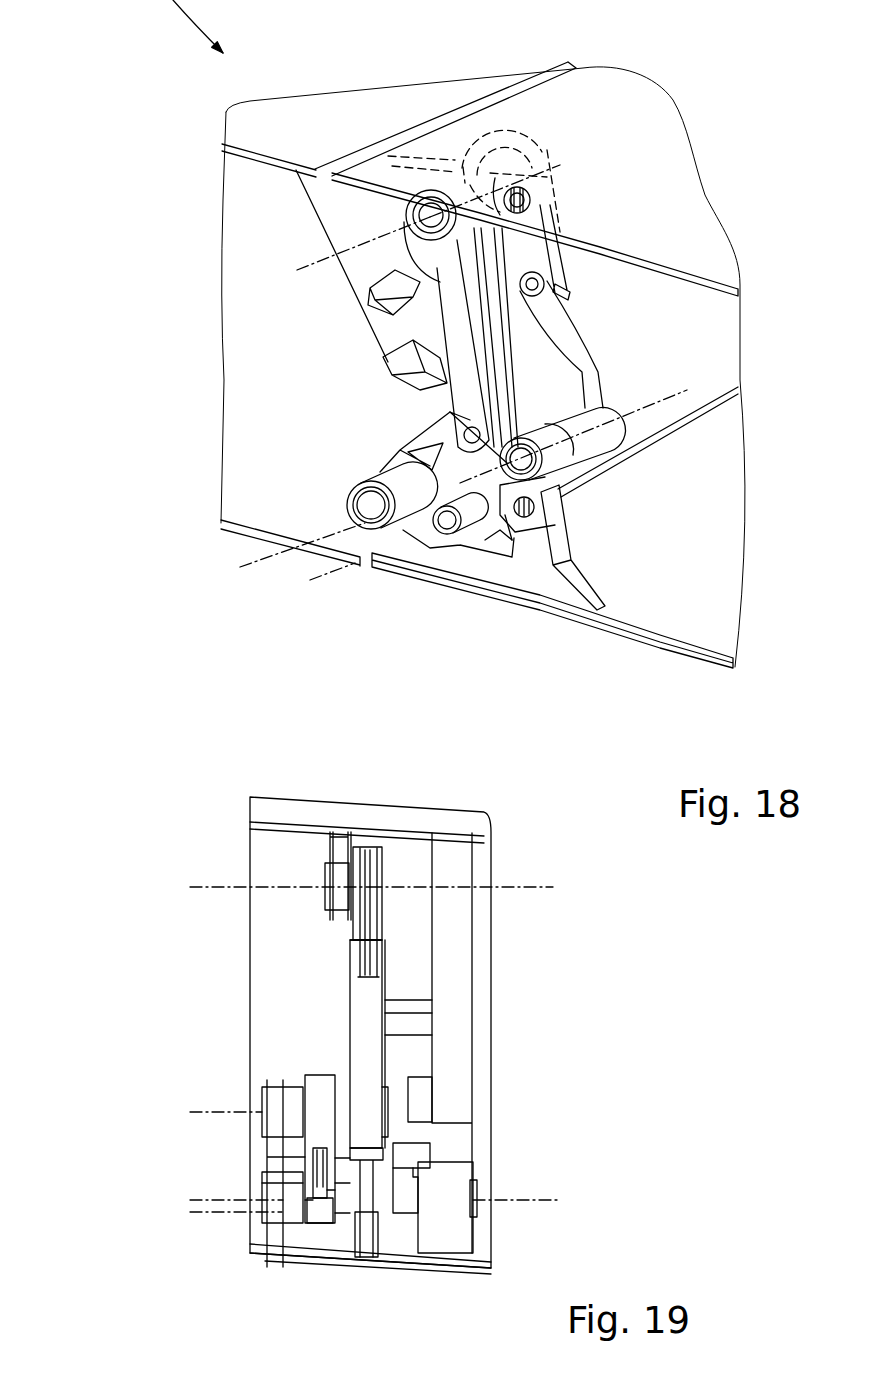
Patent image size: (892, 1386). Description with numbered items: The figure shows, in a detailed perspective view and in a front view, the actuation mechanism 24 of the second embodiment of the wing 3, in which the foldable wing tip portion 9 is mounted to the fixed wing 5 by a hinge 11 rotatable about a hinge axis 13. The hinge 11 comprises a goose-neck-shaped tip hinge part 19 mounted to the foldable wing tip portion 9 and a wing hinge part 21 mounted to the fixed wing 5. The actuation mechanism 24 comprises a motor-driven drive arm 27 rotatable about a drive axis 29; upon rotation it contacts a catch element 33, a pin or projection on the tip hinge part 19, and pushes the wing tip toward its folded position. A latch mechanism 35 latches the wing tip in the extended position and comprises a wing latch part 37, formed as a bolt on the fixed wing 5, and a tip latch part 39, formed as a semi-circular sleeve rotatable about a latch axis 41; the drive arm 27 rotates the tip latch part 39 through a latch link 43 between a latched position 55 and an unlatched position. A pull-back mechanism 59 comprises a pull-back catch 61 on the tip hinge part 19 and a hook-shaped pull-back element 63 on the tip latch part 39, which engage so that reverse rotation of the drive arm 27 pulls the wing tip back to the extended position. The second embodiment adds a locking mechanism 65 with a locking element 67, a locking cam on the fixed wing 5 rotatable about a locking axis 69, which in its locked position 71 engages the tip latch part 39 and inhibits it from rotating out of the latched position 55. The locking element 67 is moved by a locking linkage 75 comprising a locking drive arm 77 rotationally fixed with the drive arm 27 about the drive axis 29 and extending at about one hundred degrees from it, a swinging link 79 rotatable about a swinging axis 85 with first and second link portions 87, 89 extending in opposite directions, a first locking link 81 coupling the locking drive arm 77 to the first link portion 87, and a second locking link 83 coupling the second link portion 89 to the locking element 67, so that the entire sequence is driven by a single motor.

In FIG. 18, the wing 3 is at (125, 98).
In FIG. 18, the fixed wing 5 is at (713, 288).
In FIG. 19, the fixed wing 5 is at (265, 812).
In FIG. 18, the foldable wing tip portion 9 is at (324, 144).
In FIG. 19, the foldable wing tip portion 9 is at (277, 843).
In FIG. 18, the hinge 11 is at (523, 150).
In FIG. 18, the hinge axis 13 is at (310, 262).
In FIG. 19, the hinge axis 13 is at (540, 887).
In FIG. 18, the tip hinge part 19 is at (363, 226).
In FIG. 19, the tip hinge part 19 is at (453, 1070).
In FIG. 18, the wing hinge part 21 is at (540, 117).
In FIG. 18, the actuation mechanism 24 is at (415, 405).
In FIG. 18, the drive arm 27 is at (466, 291).
In FIG. 19, the drive arm 27 is at (357, 928).
In FIG. 18, the drive axis 29 is at (495, 191).
In FIG. 19, the drive axis 29 is at (220, 890).
In FIG. 18, the catch element 33 is at (377, 296).
In FIG. 19, the catch element 33 is at (417, 1007).
In FIG. 18, the latch mechanism 35 is at (410, 590).
In FIG. 18, the wing latch part 37 is at (366, 495).
In FIG. 19, the wing latch part 37 is at (295, 1197).
In FIG. 18, the tip latch part 39 is at (395, 455).
In FIG. 19, the tip latch part 39 is at (343, 1175).
In FIG. 18, the latch axis 41 is at (322, 532).
In FIG. 19, the latch axis 41 is at (532, 1200).
In FIG. 18, the latch link 43 is at (512, 428).
In FIG. 19, the latch link 43 is at (368, 1192).
In FIG. 18, the latched position 55 is at (301, 571).
In FIG. 18, the pull-back mechanism 59 is at (365, 355).
In FIG. 18, the pull-back catch 61 is at (405, 368).
In FIG. 19, the pull-back catch 61 is at (422, 1100).
In FIG. 19, the pull-back element 63 is at (417, 1157).
In FIG. 18, the locking mechanism 65 is at (582, 206).
In FIG. 18, the locking element 67 is at (498, 545).
In FIG. 19, the locking element 67 is at (317, 1193).
In FIG. 18, the locking axis 69 is at (335, 570).
In FIG. 19, the locking axis 69 is at (230, 1210).
In FIG. 18, the locked position 71 is at (451, 565).
In FIG. 18, the locking linkage 75 is at (640, 366).
In FIG. 18, the locking drive arm 77 is at (496, 193).
In FIG. 19, the locking drive arm 77 is at (377, 877).
In FIG. 18, the swinging link 79 is at (653, 405).
In FIG. 19, the swinging link 79 is at (363, 1072).
In FIG. 18, the first locking link 81 is at (533, 252).
In FIG. 19, the first locking link 81 is at (368, 903).
In FIG. 18, the second locking link 83 is at (510, 535).
In FIG. 19, the second locking link 83 is at (320, 1187).
In FIG. 18, the swinging axis 85 is at (652, 404).
In FIG. 19, the swinging axis 85 is at (212, 1112).
In FIG. 18, the first link portion 87 is at (547, 331).
In FIG. 19, the first link portion 87 is at (363, 1013).
In FIG. 18, the second link portion 89 is at (563, 491).
In FIG. 19, the second link portion 89 is at (307, 1160).